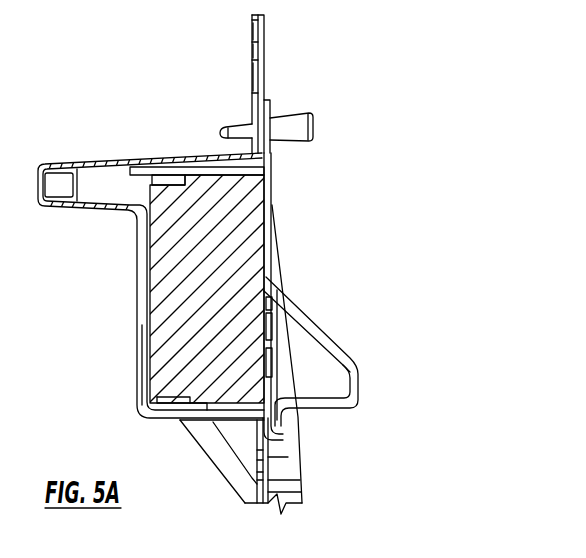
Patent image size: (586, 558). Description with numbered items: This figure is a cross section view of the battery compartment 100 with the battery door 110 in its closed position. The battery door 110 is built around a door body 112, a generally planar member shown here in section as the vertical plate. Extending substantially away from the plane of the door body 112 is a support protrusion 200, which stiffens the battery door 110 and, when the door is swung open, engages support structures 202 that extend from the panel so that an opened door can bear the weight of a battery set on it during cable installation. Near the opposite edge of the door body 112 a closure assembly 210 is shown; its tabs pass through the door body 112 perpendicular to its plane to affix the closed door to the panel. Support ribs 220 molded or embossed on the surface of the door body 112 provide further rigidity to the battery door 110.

The battery compartment 100 is at (135, 133).
The battery door 110 is at (302, 173).
The door body 112 is at (267, 117).
The support protrusion 200 is at (340, 343).
The support structures 202 is at (310, 473).
The closure assembly 210 is at (304, 128).
The support ribs 220 is at (274, 203).